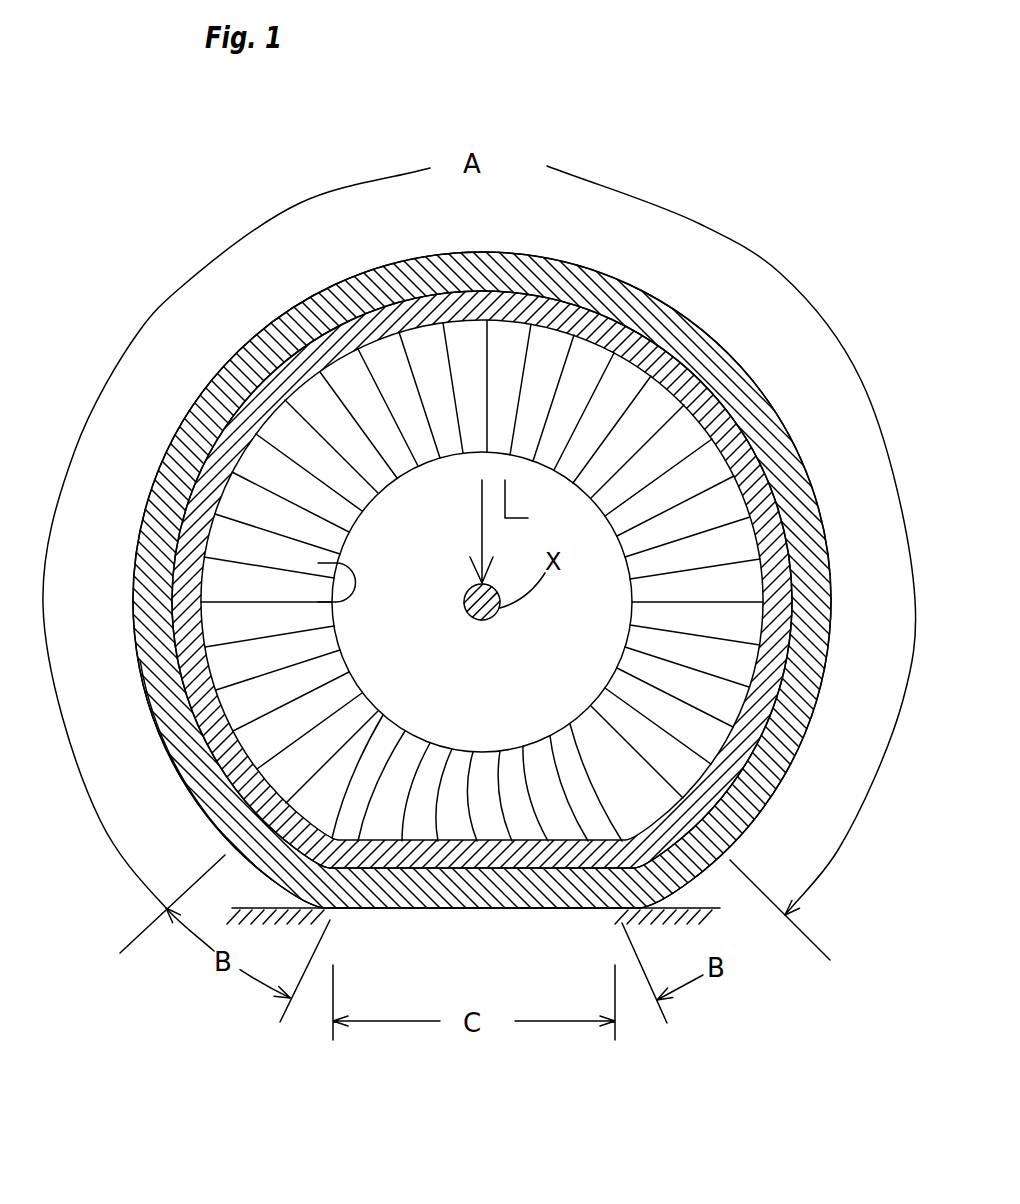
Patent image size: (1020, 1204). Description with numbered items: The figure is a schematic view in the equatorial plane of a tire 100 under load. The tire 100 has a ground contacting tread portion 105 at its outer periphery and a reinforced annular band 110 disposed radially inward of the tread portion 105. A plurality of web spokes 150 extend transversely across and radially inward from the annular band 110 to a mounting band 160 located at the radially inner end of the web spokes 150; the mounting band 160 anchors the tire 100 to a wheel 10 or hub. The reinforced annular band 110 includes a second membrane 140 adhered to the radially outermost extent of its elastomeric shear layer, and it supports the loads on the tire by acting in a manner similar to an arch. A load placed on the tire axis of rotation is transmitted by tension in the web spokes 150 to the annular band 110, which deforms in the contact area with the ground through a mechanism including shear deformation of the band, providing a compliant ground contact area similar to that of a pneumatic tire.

The tire 100 is at (170, 248).
The ground contacting tread portion 105 is at (372, 292).
The reinforced annular band 110 is at (442, 307).
The second membrane 140 is at (203, 818).
The web spokes 150 is at (272, 490).
The mounting band 160 is at (331, 544).
The wheel 10 is at (493, 697).